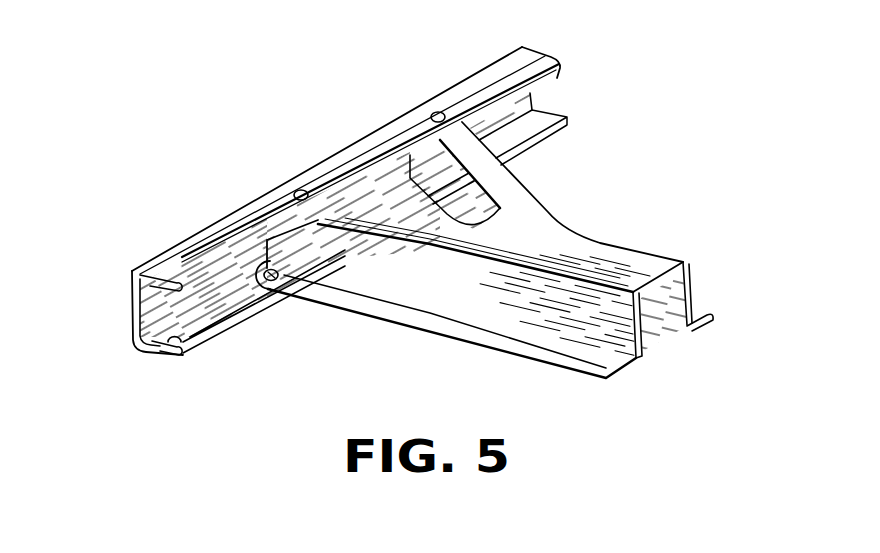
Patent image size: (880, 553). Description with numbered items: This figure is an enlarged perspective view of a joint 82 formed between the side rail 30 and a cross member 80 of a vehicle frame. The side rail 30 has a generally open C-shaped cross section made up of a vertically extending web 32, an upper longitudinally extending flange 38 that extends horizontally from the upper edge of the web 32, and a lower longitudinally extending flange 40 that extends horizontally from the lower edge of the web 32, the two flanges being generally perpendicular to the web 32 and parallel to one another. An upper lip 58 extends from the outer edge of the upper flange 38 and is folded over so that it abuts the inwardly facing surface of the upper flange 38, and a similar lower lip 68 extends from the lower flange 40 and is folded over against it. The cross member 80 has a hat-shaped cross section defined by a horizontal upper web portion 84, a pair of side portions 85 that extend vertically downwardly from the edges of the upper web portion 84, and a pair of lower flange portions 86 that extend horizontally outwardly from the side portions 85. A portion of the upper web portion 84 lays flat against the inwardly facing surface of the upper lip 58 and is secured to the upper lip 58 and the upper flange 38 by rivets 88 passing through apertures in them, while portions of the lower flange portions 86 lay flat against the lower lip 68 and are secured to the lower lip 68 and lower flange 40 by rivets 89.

The side rail 30 is at (309, 226).
The web 32 is at (132, 318).
The upper longitudinally extending flange 38 is at (158, 274).
The lower longitudinally extending flange 40 is at (157, 352).
The upper longitudinally extending lip 58 is at (133, 293).
The lower longitudinally extending lip 68 is at (190, 348).
The cross member 80 is at (508, 295).
The joint 82 is at (338, 133).
The upper web portion 84 is at (533, 232).
The side portions 85 is at (439, 292).
The lower flange portions 86 is at (361, 302).
The rivets 88 is at (298, 189).
The rivets 89 is at (276, 290).